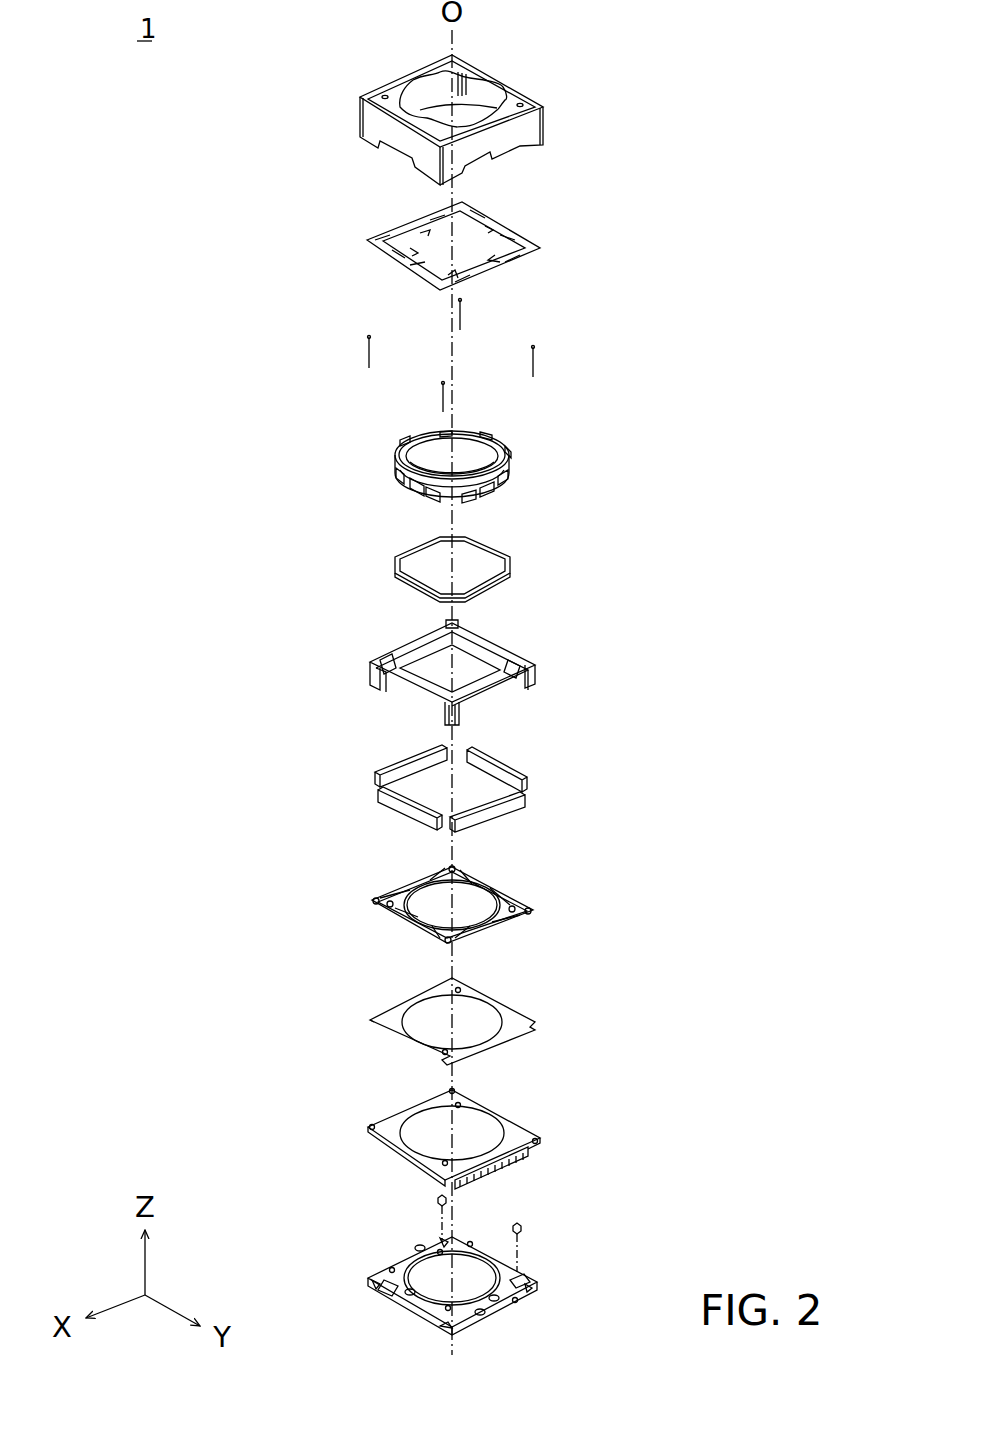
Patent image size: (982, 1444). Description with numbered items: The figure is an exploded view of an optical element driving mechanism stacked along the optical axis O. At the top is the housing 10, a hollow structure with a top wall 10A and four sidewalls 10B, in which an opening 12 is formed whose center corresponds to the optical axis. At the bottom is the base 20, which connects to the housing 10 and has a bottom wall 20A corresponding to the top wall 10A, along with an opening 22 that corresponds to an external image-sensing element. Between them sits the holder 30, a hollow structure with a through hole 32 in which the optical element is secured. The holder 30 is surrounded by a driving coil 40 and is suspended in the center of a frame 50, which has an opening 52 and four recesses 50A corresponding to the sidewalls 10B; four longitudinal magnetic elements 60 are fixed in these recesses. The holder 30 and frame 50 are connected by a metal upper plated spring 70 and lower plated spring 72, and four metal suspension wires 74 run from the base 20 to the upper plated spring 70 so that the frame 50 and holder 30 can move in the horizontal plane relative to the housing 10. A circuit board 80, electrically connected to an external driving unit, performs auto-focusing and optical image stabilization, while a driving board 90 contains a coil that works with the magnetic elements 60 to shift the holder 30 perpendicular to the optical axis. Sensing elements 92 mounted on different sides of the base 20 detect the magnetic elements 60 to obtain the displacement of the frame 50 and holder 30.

The housing 10 is at (444, 111).
The top wall 10A is at (386, 91).
The sidewalls 10B is at (408, 148).
The opening 12 is at (473, 108).
The upper plated spring 70 is at (368, 240).
The suspension wires 74 is at (464, 312).
The holder 30 is at (450, 463).
The through hole 32 is at (468, 470).
The driving coil 40 is at (398, 561).
The frame 50 is at (440, 658).
The opening 52 is at (490, 670).
The recesses 50A is at (390, 685).
The magnetic elements 60 is at (380, 782).
The lower plated spring 72 is at (374, 902).
The driving board 90 is at (372, 1021).
The circuit board 80 is at (368, 1128).
The sensing element 92 is at (438, 1199).
The base 20 is at (413, 1285).
The opening 22 is at (436, 1272).
The bottom wall 20A is at (398, 1300).